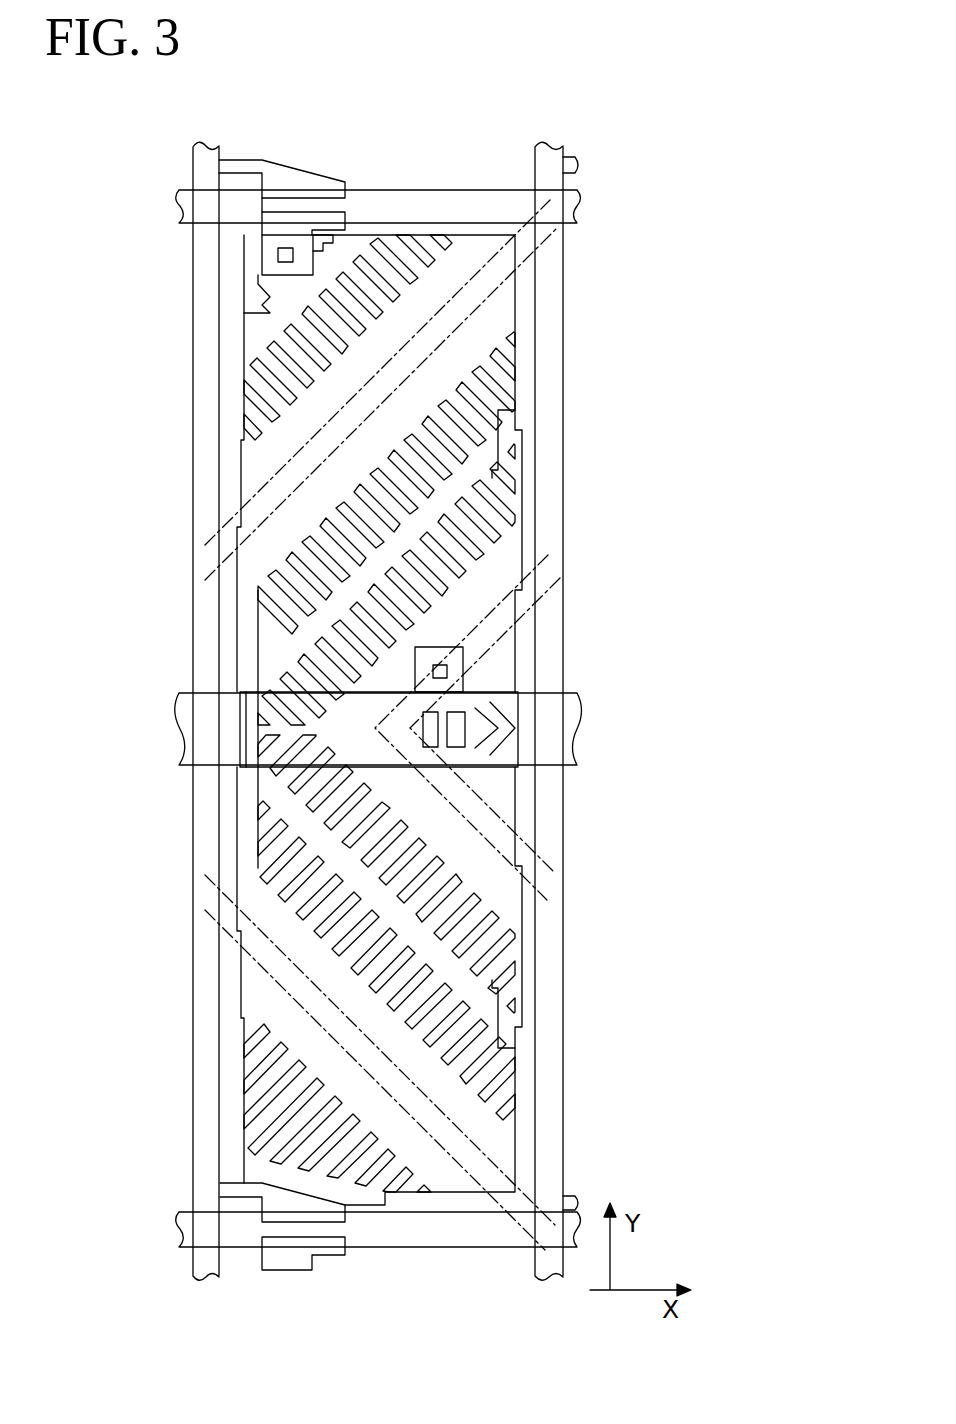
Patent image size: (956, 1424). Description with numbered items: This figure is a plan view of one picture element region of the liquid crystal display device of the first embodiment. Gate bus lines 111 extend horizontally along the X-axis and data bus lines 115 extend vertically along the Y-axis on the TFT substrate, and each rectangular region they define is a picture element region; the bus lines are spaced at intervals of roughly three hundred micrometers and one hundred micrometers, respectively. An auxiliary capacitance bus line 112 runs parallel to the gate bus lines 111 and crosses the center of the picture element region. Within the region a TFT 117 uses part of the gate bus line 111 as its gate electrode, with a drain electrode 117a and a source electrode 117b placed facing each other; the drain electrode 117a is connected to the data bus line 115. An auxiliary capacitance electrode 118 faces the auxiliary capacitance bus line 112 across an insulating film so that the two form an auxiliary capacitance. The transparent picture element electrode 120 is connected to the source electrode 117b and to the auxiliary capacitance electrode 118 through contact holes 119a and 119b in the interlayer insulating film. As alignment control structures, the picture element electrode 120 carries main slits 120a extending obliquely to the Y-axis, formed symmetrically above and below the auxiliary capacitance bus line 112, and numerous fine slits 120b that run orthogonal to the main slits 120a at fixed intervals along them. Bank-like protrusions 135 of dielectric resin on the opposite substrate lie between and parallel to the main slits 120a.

The gate bus line 111 is at (177, 205).
The auxiliary capacitance bus line 112 is at (186, 739).
The data bus line 115 is at (206, 147).
The TFT 117 is at (316, 162).
The drain electrode 117a is at (287, 186).
The source electrode 117b is at (333, 218).
The auxiliary capacitance electrode 118 is at (478, 768).
The contact hole 119a is at (279, 256).
The contact hole 119b is at (447, 672).
The picture element electrode 120 is at (262, 549).
The main slit 120a is at (262, 325).
The fine slit 120b is at (490, 410).
The bank-like protrusion 135 is at (492, 300).